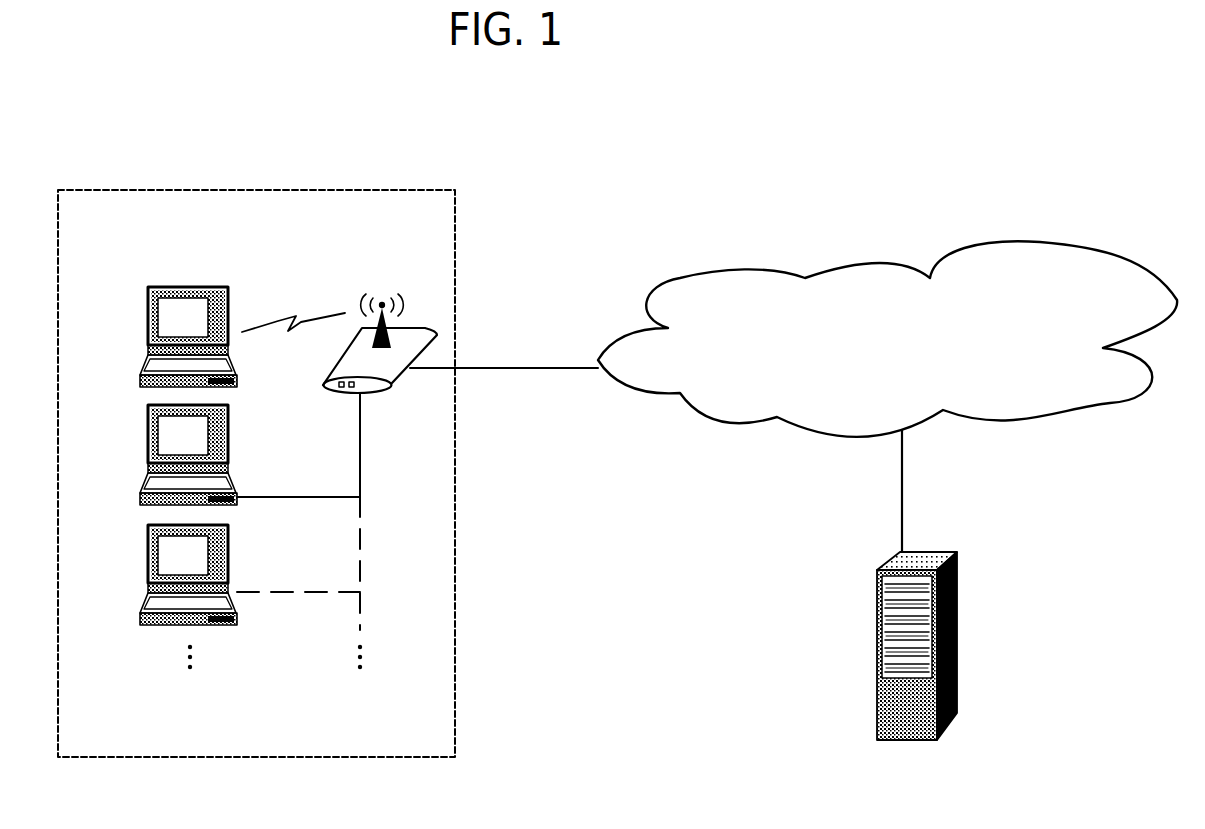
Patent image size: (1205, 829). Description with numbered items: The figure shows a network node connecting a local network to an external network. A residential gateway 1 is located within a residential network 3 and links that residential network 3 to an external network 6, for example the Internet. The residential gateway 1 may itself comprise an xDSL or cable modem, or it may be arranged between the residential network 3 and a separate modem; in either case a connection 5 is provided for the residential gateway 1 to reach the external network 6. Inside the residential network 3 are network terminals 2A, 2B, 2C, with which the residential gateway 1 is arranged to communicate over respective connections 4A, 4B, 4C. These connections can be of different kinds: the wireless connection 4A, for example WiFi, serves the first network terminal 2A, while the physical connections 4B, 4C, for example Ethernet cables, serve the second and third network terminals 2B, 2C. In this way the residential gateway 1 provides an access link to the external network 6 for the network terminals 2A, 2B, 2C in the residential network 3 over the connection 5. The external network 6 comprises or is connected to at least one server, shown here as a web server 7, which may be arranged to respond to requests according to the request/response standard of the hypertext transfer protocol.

The residential gateway 1 is at (403, 330).
The network terminal 2A is at (147, 323).
The network terminal 2B is at (147, 451).
The network terminal 2C is at (147, 569).
The residential network 3 is at (232, 190).
The wireless connection 4A is at (273, 322).
The physical connection 4B is at (267, 497).
The physical connection 4C is at (267, 592).
The connection 5 is at (483, 368).
The external network 6 is at (717, 270).
The web server 7 is at (957, 567).